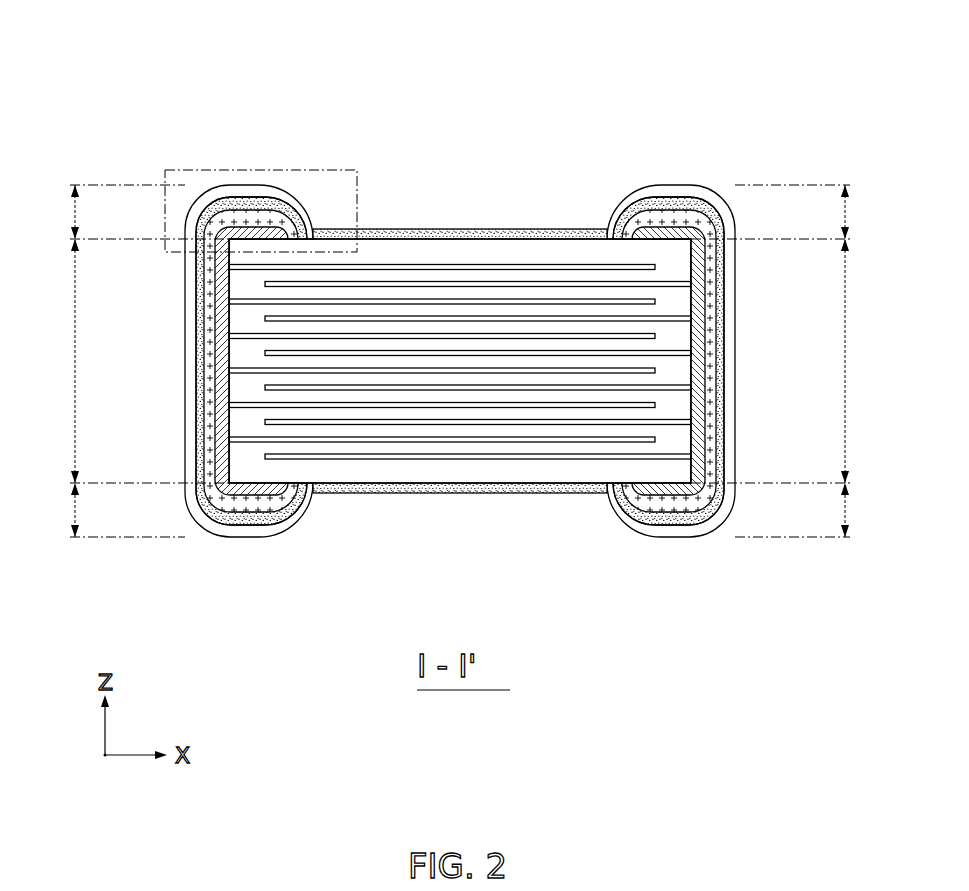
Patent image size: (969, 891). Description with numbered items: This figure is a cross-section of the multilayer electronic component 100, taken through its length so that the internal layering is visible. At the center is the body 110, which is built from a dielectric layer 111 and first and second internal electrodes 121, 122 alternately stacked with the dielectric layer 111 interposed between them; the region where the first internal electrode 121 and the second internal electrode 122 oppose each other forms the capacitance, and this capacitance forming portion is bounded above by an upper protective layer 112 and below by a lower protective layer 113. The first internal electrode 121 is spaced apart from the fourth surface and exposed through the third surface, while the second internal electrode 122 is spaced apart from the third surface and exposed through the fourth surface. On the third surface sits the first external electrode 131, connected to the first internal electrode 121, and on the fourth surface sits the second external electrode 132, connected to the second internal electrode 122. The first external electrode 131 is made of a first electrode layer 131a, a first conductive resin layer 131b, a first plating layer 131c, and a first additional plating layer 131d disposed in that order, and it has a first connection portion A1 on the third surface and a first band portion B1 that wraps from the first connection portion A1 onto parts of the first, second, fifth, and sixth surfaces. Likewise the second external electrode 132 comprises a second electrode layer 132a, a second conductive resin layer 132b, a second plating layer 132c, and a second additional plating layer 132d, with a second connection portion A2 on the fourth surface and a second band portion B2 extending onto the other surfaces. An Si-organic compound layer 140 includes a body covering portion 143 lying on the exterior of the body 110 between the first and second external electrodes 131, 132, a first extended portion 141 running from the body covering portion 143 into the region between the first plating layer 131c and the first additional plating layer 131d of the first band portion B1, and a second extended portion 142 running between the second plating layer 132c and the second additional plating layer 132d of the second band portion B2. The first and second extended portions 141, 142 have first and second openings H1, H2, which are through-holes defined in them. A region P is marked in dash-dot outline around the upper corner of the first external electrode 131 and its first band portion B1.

The multilayer electronic component 100 is at (181, 35).
The body 110 is at (445, 224).
The dielectric layer 111 is at (398, 250).
The upper protective layer 112 is at (542, 253).
The lower protective layer 113 is at (458, 473).
The first internal electrode 121 is at (393, 268).
The second internal electrode 122 is at (332, 283).
The first external electrode 131 is at (191, 417).
The first electrode layer 131a is at (177, 413).
The first conductive resin layer 131b is at (205, 525).
The first plating layer 131c is at (235, 502).
The first additional plating layer 131d is at (282, 525).
The second external electrode 132 is at (731, 417).
The second electrode layer 132a is at (728, 402).
The second conductive resin layer 132b is at (691, 393).
The second plating layer 132c is at (668, 387).
The second additional plating layer 132d is at (671, 381).
The Si-organic compound layer 140 is at (530, 267).
The first extended portion 141 is at (252, 202).
The second extended portion 142 is at (658, 207).
The body covering portion 143 is at (502, 232).
The enlarged region P is at (222, 170).
The first connection portion A1 is at (49, 375).
The second connection portion A2 is at (872, 375).
The first band portion B1 is at (49, 362).
The second band portion B2 is at (872, 362).
The first opening H1 is at (192, 345).
The second opening H2 is at (728, 347).